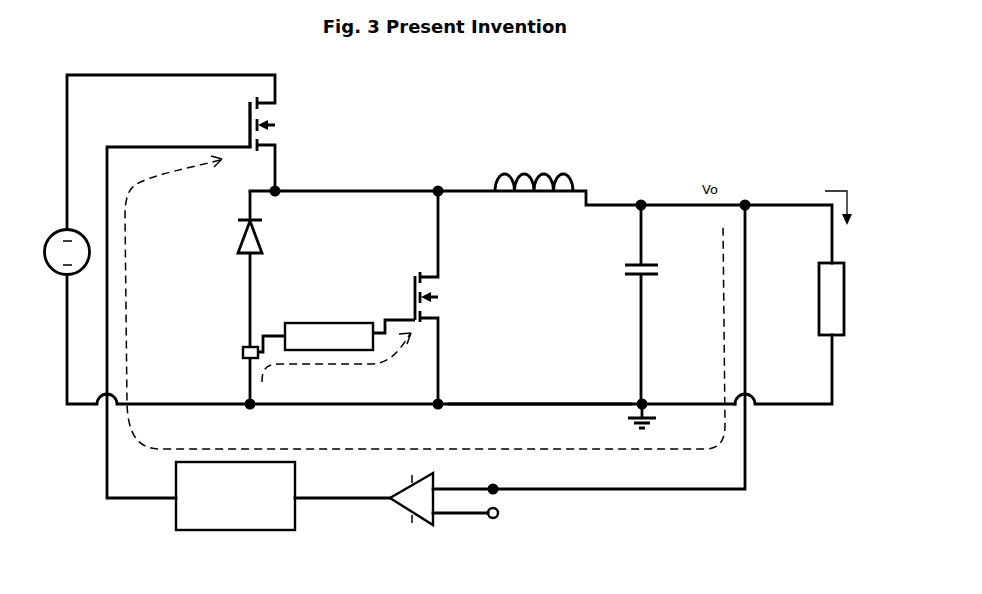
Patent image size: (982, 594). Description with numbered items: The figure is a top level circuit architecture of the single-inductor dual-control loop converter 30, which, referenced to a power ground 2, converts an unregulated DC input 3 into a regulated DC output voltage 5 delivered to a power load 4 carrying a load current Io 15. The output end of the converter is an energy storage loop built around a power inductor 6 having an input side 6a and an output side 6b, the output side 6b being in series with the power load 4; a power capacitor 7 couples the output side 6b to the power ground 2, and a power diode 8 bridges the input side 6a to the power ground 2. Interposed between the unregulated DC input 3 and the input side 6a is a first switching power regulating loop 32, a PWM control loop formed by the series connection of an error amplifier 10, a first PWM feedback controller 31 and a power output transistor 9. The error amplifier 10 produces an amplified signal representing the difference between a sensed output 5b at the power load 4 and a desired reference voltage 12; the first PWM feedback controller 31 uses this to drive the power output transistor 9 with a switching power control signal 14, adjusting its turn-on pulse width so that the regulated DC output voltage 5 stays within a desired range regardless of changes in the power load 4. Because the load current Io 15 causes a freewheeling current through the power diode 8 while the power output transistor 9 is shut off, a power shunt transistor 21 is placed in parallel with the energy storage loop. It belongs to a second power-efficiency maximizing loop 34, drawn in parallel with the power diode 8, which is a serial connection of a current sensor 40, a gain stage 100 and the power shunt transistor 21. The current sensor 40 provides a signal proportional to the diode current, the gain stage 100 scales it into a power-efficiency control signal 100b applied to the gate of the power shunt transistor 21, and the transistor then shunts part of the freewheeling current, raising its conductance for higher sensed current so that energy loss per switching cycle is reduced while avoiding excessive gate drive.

The power ground 2 is at (517, 398).
The unregulated DC input 3 is at (45, 242).
The power load 4 is at (845, 289).
The regulated DC output voltage 5 is at (752, 198).
The sensed output 5b is at (500, 487).
The power inductor 6 is at (517, 172).
The input side 6a is at (437, 188).
The output side 6b is at (645, 201).
The power capacitor 7 is at (625, 268).
The power diode 8 is at (235, 240).
The power output transistor 9 is at (282, 121).
The error amplifier 10 is at (403, 506).
The desired reference voltage 12 is at (492, 522).
The switching power control signal 14 is at (248, 128).
The load current Io 15 is at (865, 190).
The power shunt transistor 21 is at (445, 296).
The single-inductor dual-control loop converter 30 is at (668, 85).
The first PWM feedback controller 31 is at (218, 532).
The first switching power regulating loop 32 is at (358, 449).
The second power-efficiency maximizing loop 34 is at (385, 352).
The current sensor 40 is at (240, 360).
The gain stage 100 is at (318, 320).
The power-efficiency control signal 100b is at (417, 295).